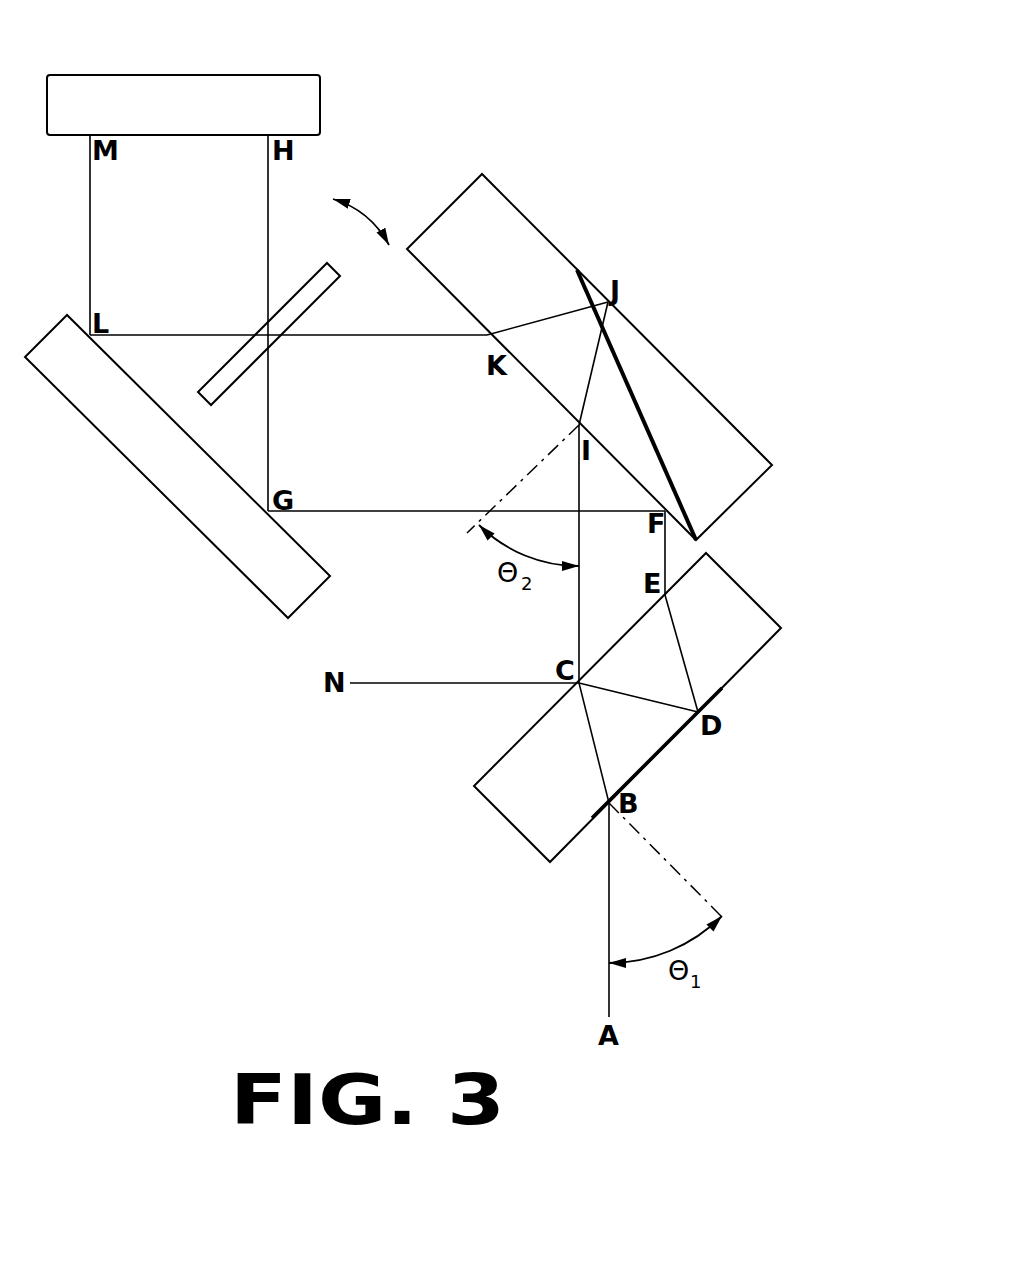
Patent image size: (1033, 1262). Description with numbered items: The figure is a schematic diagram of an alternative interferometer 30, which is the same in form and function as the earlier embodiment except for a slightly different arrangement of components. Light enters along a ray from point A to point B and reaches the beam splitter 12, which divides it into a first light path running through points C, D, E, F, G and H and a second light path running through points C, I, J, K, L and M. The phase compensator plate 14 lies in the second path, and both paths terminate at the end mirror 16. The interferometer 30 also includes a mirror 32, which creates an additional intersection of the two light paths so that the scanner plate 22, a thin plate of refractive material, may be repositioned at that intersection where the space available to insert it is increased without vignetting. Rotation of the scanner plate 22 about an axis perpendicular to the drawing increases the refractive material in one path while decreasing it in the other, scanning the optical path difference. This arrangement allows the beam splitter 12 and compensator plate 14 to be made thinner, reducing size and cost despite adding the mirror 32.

The beam splitter 12 is at (762, 585).
The compensator plate 14 is at (757, 511).
The end mirror 16 is at (350, 100).
The scanner plate 22 is at (303, 269).
The interferometer 30 is at (740, 82).
The mirror 32 is at (230, 573).